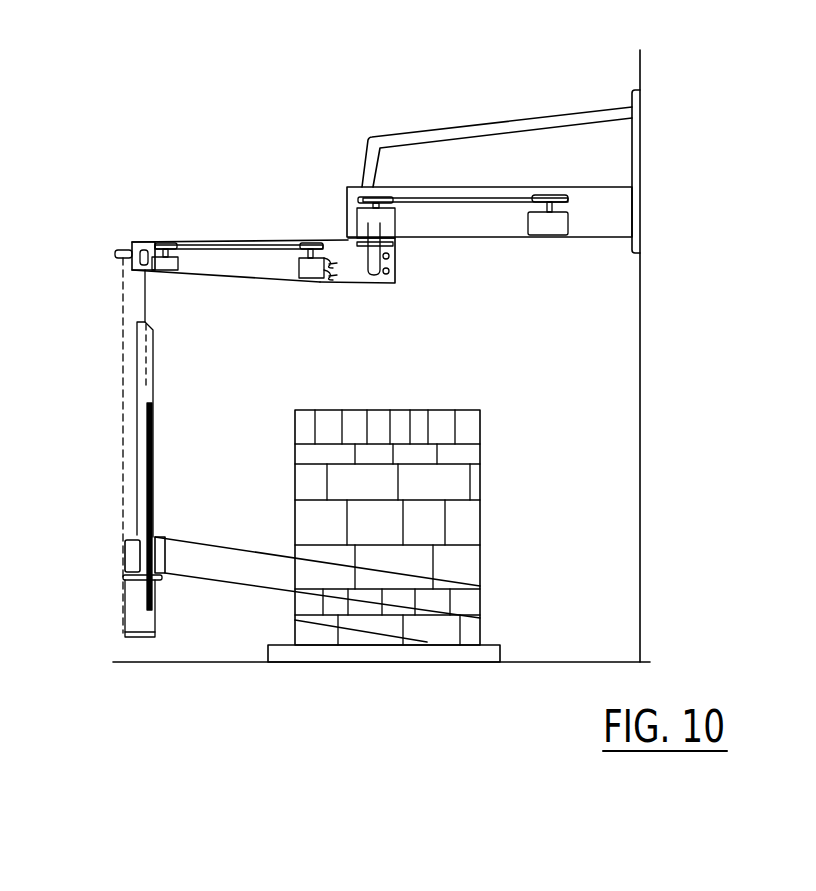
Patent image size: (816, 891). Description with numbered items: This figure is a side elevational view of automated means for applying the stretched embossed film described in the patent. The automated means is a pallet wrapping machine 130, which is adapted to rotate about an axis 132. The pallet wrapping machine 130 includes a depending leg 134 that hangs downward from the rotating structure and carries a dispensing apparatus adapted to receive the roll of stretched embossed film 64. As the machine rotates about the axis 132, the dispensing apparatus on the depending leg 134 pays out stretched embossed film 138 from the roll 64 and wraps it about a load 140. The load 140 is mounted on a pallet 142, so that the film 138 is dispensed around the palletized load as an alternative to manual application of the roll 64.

The pallet wrapping machine 130 is at (317, 178).
The axis 132 is at (372, 262).
The depending leg 134 is at (142, 378).
The roll of stretched embossed film 64 is at (132, 558).
The stretched embossed film 138 is at (213, 555).
The load 140 is at (480, 520).
The pallet 142 is at (473, 640).